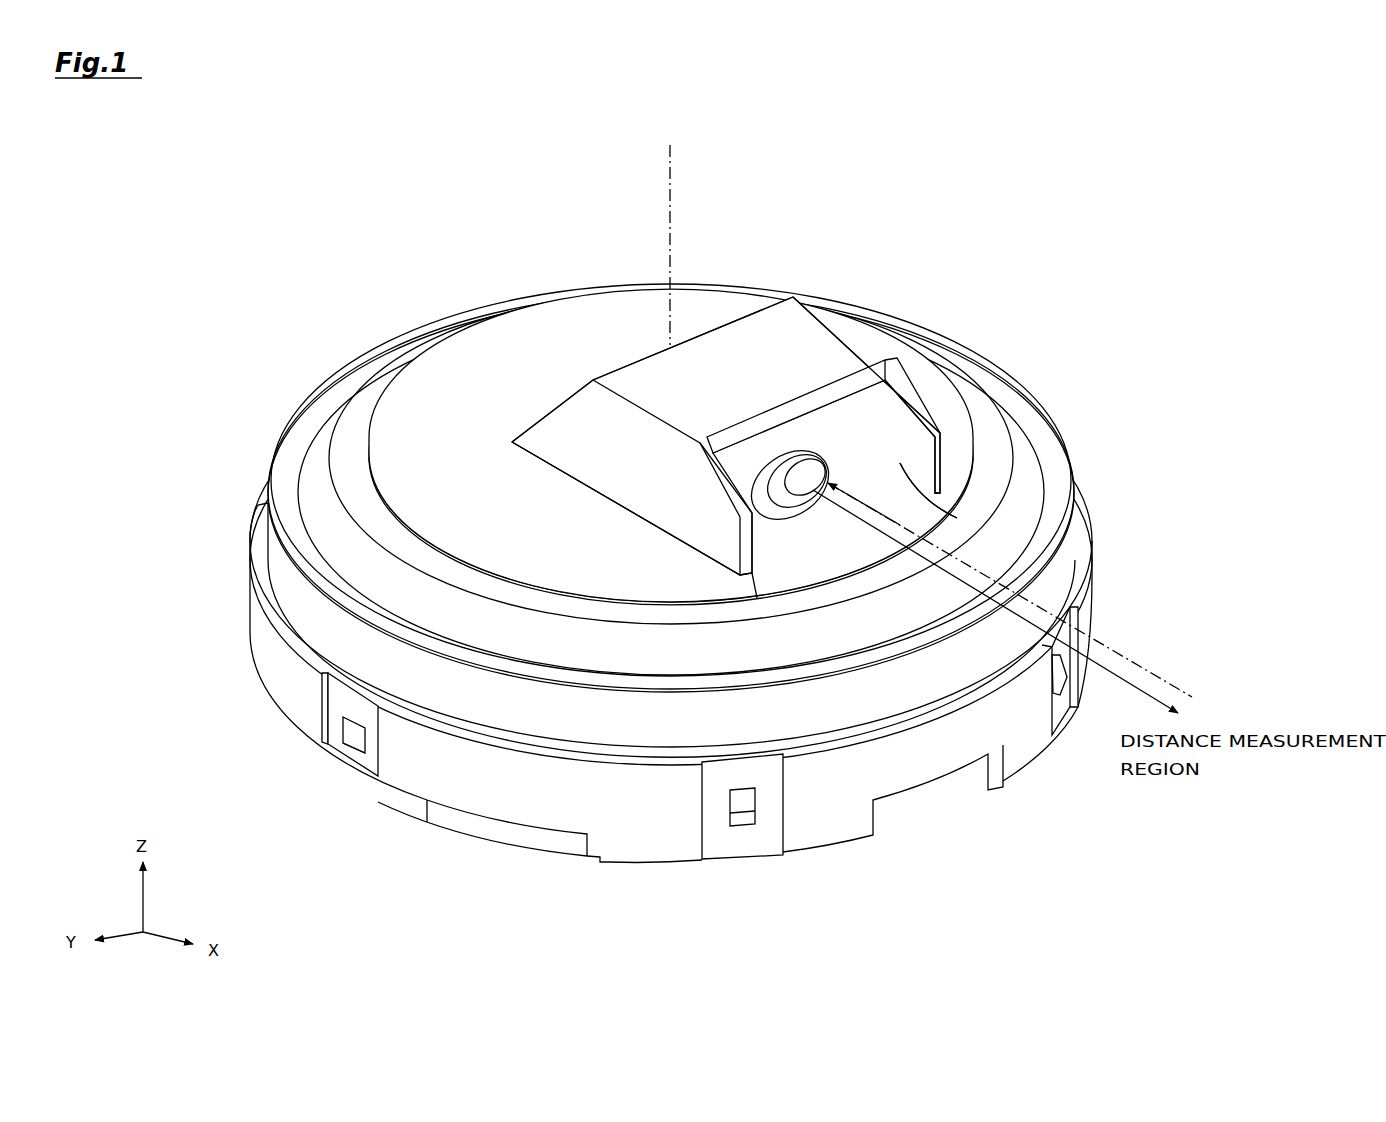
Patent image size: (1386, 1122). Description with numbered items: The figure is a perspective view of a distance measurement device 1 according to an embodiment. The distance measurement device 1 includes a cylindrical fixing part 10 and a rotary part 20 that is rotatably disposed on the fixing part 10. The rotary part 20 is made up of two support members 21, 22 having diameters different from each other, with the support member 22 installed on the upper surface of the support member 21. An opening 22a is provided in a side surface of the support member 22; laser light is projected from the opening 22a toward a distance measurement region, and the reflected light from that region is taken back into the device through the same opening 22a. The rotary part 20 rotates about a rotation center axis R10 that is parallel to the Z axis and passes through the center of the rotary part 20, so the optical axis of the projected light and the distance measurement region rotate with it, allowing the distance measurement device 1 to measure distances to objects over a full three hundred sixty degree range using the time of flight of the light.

The distance measurement device 1 is at (353, 191).
The fixing part 10 is at (445, 843).
The rotary part 20 is at (323, 356).
The support member 21 is at (1012, 400).
The support member 22 is at (560, 316).
The opening 22a is at (900, 466).
The rotation center axis R10 is at (667, 231).